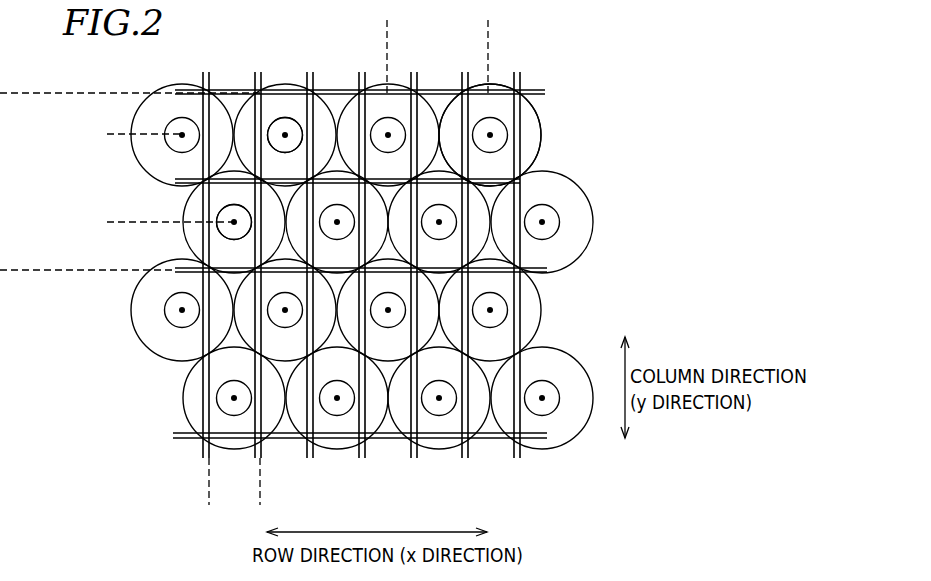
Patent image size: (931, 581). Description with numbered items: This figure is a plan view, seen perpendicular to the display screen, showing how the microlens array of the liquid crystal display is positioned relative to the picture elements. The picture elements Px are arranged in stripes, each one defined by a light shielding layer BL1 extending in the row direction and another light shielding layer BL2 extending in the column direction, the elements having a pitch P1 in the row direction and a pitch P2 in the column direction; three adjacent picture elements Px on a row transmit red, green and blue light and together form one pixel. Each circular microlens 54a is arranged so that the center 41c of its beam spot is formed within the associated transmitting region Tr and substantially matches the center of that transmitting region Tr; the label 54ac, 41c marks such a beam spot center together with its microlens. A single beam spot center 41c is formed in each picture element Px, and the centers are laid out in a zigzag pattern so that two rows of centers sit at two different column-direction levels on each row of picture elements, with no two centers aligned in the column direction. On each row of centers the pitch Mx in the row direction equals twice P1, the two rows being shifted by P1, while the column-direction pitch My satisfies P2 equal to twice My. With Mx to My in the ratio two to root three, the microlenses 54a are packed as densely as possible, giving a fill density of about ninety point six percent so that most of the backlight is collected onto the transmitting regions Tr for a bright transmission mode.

The center of a beam spot 41c is at (285, 130).
The contact hole of pixel 54ac is at (218, 227).
The microlens 54a is at (580, 259).
The transmitting region Tr is at (559, 222).
The picture element Px is at (488, 196).
The light shielding layer BL1 is at (545, 90).
The light shielding layer BL2 is at (521, 80).
The pitch in the row direction P1 is at (260, 494).
The pitch in the column direction P2 is at (23, 270).
The pitch of beam spot centers in the row direction Mx is at (488, 35).
The pitch of beam spot centers in the column direction My is at (120, 134).